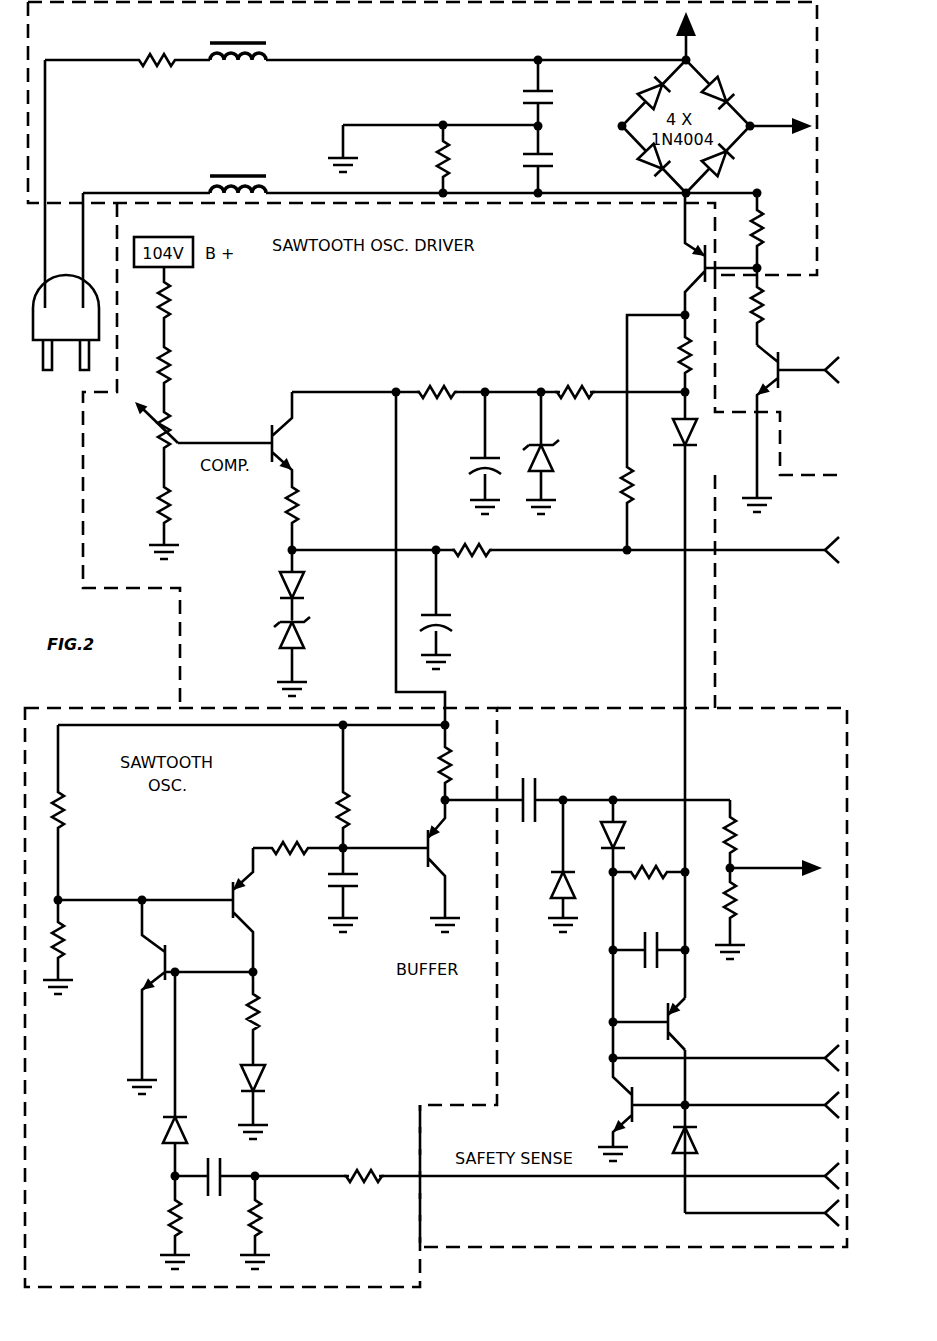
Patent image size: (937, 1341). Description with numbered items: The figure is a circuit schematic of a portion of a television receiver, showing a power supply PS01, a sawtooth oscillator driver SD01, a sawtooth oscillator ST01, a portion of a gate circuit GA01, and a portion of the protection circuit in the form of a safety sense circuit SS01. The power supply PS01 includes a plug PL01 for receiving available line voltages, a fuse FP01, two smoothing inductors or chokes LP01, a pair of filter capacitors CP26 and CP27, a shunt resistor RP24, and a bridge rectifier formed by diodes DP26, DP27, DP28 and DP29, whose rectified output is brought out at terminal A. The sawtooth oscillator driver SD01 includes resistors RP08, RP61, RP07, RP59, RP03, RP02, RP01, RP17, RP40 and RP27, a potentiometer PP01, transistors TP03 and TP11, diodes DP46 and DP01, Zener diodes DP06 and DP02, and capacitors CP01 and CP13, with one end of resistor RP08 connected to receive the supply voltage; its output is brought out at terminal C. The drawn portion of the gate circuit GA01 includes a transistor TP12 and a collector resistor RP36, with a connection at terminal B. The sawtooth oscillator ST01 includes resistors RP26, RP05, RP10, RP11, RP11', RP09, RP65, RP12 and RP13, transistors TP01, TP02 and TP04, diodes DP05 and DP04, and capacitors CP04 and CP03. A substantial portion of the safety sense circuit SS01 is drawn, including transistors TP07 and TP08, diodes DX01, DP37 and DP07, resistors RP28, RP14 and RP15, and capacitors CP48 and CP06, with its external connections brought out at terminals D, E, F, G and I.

The power supply PS01 is at (341, 36).
The sawtooth oscillator driver SD01 is at (367, 334).
The gate GA01 is at (840, 449).
The sawtooth oscillator ST01 is at (191, 818).
The safety sense circuit SS01 is at (633, 977).
The fuse T2.5A FP01 is at (146, 86).
The smoothing inductor LP01 is at (238, 118).
The shunt resistor RP24 is at (418, 159).
The filter capacitor CP26 is at (515, 96).
The filter capacitor CP27 is at (515, 164).
The bridge rectifier diode DP26 is at (631, 91).
The bridge rectifier diode DP27 is at (740, 91).
The bridge rectifier diode DP28 is at (631, 164).
The bridge rectifier diode DP29 is at (740, 164).
The output terminal A is at (770, 127).
The plug PL01 is at (66, 322).
The resistor RP08 is at (208, 306).
The resistor RP61 is at (208, 377).
The potentiometer PP01 is at (192, 441).
The resistor RP07 is at (203, 522).
The transistor TP03 is at (316, 438).
The resistor RP59 is at (319, 520).
The resistor RP03 is at (439, 370).
The resistor RP02 is at (574, 370).
The capacitor CP01 is at (464, 453).
The Zener diode DP02 is at (568, 453).
The resistor RP01 is at (659, 388).
The resistor 4.7K 7W RP17 is at (652, 508).
The diode DP01 is at (710, 431).
The transistor TP11 is at (695, 254).
The resistor RP40 is at (732, 231).
The collector resistor RP36 is at (783, 306).
The transistor TP12 is at (774, 428).
The terminal B is at (797, 368).
The terminal C is at (785, 550).
The resistor RP27 is at (480, 573).
The diode DP46 is at (268, 585).
The Zener diode DP06 is at (318, 650).
The capacitor CP13 is at (463, 609).
The resistor RP26 is at (84, 815).
The resistor RP05 is at (81, 947).
The transistor TP02 is at (206, 908).
The resistor RP65 is at (298, 873).
The resistor RP12 is at (321, 786).
The capacitor CP03 is at (370, 890).
The transistor TP04 is at (463, 866).
The resistor RP13 is at (421, 765).
The transistor TP01 is at (192, 997).
The resistor RP09 is at (281, 1018).
The diode DP04 is at (280, 1102).
The diode DP05 is at (150, 1076).
The resistor RP10 is at (155, 1222).
The capacitor CP04 is at (217, 1202).
The resistor RP11 is at (278, 1222).
The resistor 560K RP11' is at (320, 1153).
The capacitor CP48 is at (587, 779).
The resistor RP14 is at (755, 836).
The resistor RP15 is at (750, 913).
The output terminal D is at (796, 862).
The diode DP37 is at (546, 866).
The diode DP07 is at (638, 838).
The resistor RP28 is at (651, 896).
The capacitor CP06 is at (649, 974).
The transistor TP07 is at (683, 1027).
The terminal E is at (818, 1056).
The transistor TP08 is at (619, 1109).
The terminal F is at (818, 1103).
The diode DX01 is at (713, 1142).
The terminal G is at (820, 1174).
The terminal I is at (820, 1212).